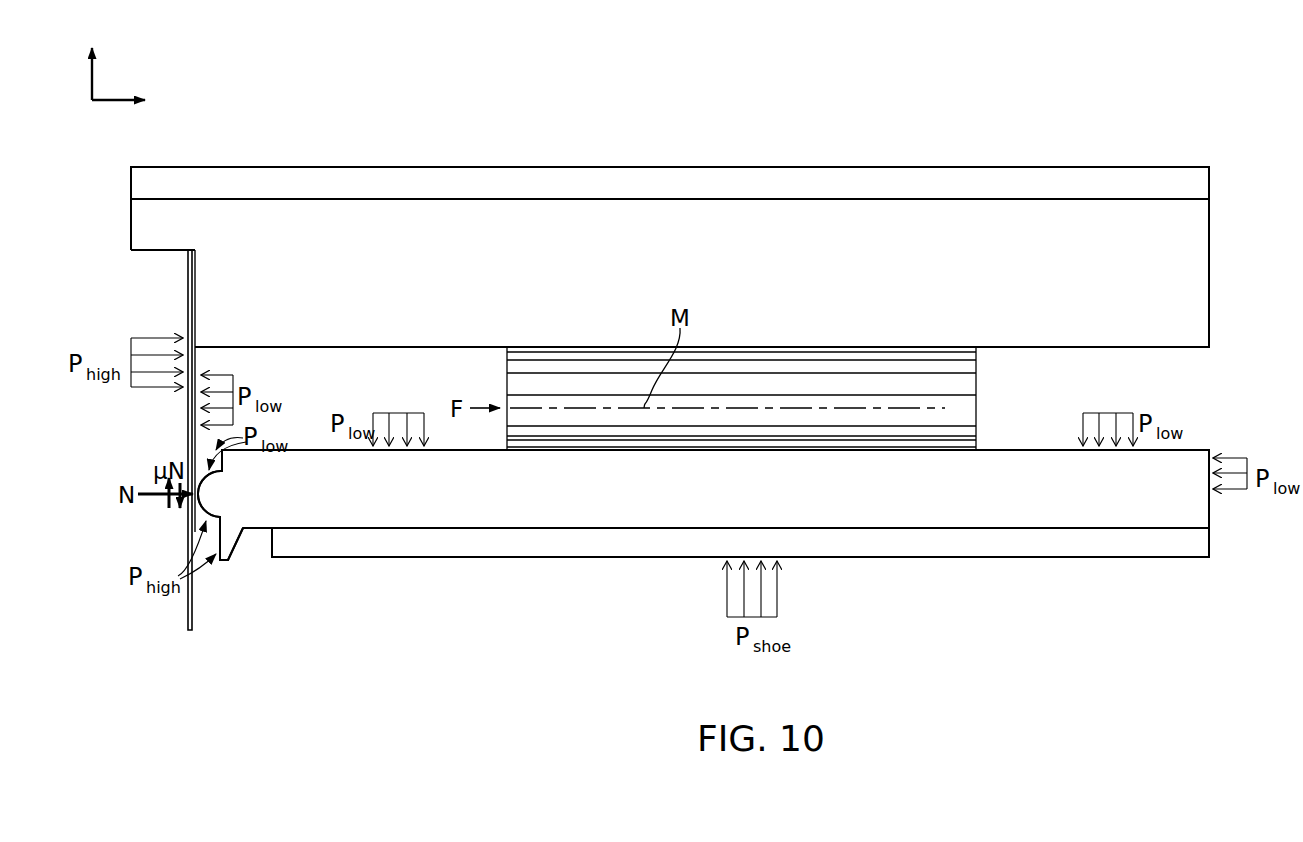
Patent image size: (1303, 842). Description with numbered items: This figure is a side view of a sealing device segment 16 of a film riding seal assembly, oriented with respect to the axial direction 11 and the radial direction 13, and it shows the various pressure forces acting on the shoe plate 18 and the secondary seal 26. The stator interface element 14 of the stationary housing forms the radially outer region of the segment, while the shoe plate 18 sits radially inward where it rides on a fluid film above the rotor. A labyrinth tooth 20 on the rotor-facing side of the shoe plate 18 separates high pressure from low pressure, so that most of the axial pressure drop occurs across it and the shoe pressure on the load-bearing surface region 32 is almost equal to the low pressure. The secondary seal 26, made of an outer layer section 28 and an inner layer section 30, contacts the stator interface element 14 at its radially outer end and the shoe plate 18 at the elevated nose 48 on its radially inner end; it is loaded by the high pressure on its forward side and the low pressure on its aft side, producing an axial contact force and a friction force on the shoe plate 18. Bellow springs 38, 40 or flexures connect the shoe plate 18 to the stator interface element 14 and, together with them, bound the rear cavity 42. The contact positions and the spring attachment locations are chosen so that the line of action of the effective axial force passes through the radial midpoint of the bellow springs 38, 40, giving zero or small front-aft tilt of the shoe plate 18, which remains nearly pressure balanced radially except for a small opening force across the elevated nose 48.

The axial direction 11 is at (140, 98).
The radial direction 13 is at (92, 78).
The stator interface element 14 is at (657, 178).
The sealing device segment 16 is at (1119, 82).
The shoe plate 18 is at (1205, 520).
The labyrinth tooth 20 is at (234, 548).
The secondary seal 26 is at (171, 440).
The outer layer section 28 is at (187, 432).
The inner layer section 30 is at (194, 310).
The load-bearing surface region 32 is at (950, 558).
The bellow spring 38 is at (751, 377).
The bellow spring 40 is at (877, 385).
The rear cavity 42 is at (332, 364).
The elevated nose 48 is at (206, 507).